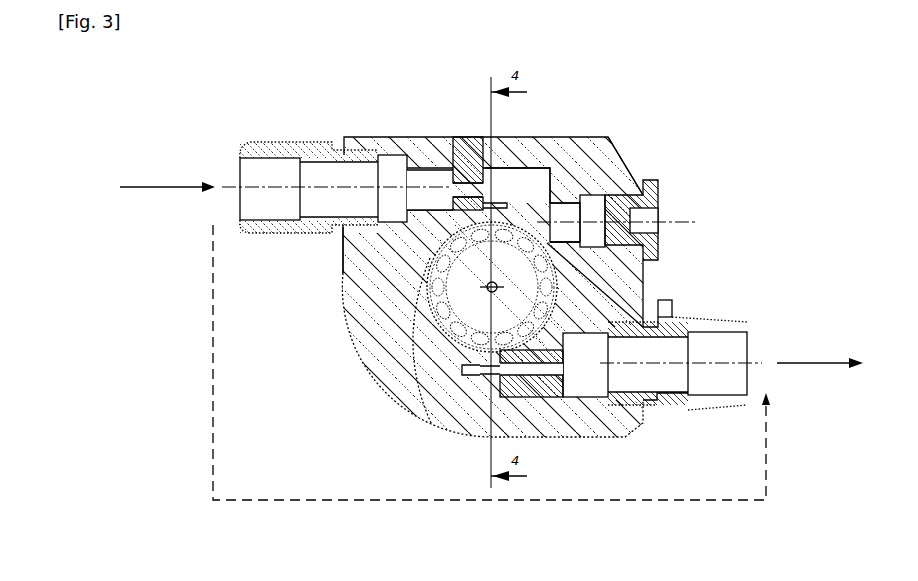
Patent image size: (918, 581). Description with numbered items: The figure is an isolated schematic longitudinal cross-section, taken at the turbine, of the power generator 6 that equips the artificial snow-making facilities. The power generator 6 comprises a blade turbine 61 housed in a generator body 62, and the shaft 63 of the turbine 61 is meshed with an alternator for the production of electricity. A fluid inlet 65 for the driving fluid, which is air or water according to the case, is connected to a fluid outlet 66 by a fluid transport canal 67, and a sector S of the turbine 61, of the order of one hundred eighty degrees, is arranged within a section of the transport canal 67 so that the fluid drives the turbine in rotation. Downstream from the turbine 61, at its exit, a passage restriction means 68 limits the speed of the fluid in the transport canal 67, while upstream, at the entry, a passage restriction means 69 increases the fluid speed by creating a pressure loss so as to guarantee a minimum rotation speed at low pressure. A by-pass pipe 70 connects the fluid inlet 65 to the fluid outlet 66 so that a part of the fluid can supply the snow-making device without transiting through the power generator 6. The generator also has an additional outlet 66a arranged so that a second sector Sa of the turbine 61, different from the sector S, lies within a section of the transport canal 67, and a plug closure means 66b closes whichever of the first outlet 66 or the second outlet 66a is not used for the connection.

The power generator 6 is at (656, 118).
The blade turbine 61 is at (400, 355).
The generator body 62 is at (430, 300).
The shaft of the turbine 63 is at (430, 262).
The fluid inlet 65 is at (300, 142).
The fluid outlet 66 is at (745, 318).
The additional outlet 66a is at (640, 168).
The plug closure means 66b is at (681, 240).
The fluid transport canal 67 is at (528, 168).
The passage restriction means 68 is at (560, 437).
The passage restriction means 69 is at (468, 150).
The by-pass pipe 70 is at (352, 501).
The sector of the turbine S is at (432, 424).
The second sector of the turbine Sa is at (603, 186).